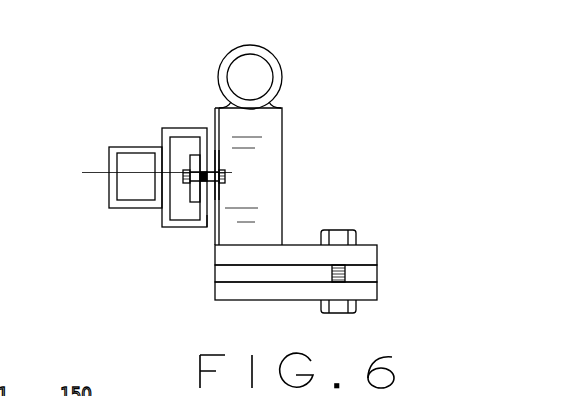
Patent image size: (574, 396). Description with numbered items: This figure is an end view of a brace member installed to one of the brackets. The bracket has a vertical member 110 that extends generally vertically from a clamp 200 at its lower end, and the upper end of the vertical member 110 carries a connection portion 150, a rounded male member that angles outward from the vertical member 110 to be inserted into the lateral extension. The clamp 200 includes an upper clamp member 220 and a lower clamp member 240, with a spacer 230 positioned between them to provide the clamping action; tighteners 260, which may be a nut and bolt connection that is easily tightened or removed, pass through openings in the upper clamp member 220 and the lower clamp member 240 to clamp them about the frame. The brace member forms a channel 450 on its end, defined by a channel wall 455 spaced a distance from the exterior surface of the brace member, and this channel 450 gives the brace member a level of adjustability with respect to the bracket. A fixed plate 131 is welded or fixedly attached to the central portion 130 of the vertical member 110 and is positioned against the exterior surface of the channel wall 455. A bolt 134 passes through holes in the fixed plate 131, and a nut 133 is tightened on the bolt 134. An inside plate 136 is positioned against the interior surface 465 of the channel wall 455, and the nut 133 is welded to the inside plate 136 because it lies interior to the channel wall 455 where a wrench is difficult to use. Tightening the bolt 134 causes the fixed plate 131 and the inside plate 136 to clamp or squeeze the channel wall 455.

The vertical member 110 is at (268, 183).
The central portion 130 is at (250, 170).
The fixed plate 131 is at (212, 165).
The nut 133 is at (109, 173).
The bolt 134 is at (227, 170).
The inside plate 136 is at (193, 158).
The connection portion 150 is at (276, 62).
The clamp 200 is at (352, 238).
The upper clamp member 220 is at (365, 255).
The spacer 230 is at (367, 272).
The lower clamp member 240 is at (366, 290).
The tightener 260 is at (342, 232).
The channel 450 is at (175, 204).
The channel wall 455 is at (209, 226).
The interior surface 465 is at (188, 142).